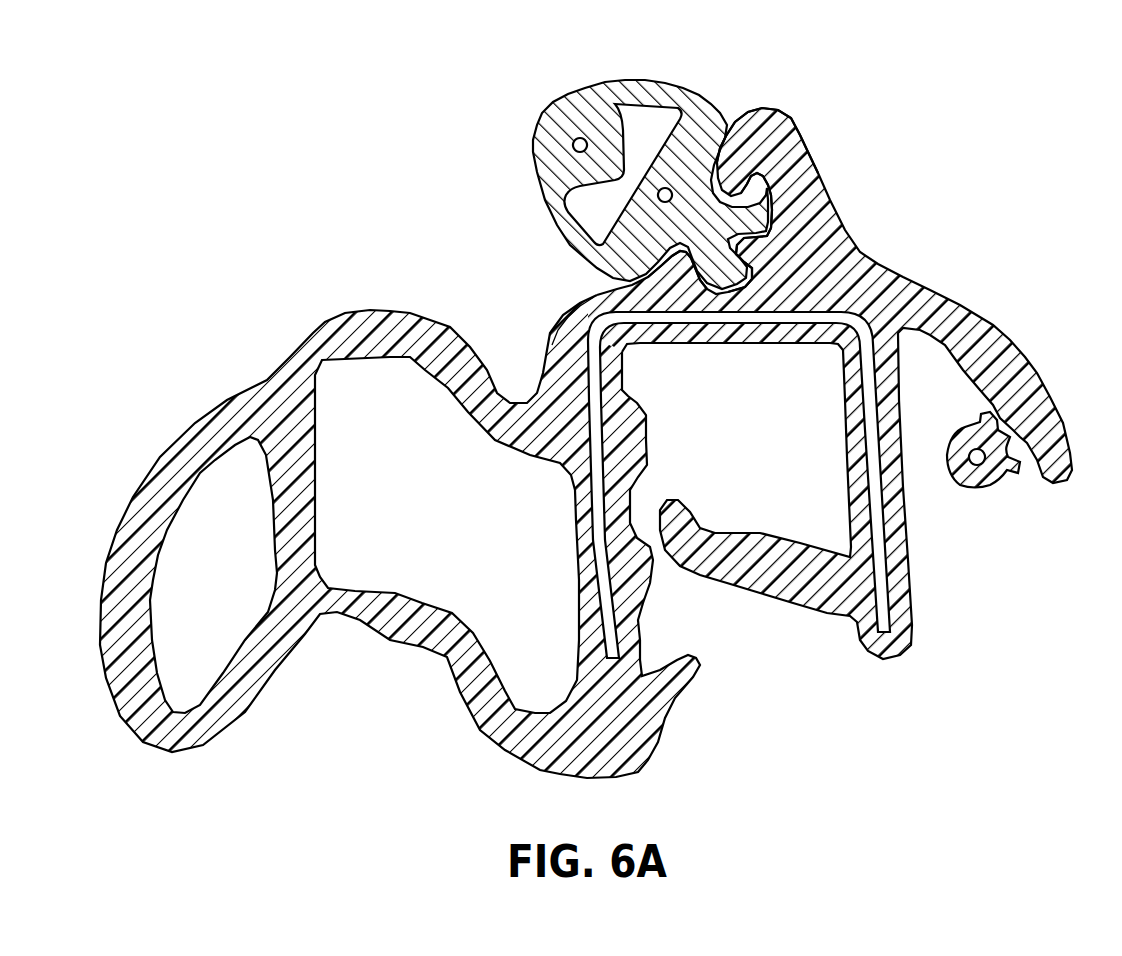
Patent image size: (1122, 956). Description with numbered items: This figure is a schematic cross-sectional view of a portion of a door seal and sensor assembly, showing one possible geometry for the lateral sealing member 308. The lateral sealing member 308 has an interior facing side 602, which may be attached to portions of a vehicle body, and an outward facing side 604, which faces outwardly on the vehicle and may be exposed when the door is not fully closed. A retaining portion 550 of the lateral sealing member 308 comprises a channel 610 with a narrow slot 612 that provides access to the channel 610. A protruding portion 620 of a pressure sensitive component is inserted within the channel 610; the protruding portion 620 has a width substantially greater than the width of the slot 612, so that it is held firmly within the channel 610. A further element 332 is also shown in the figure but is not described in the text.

The lateral sealing member 308 is at (830, 348).
The cover strip 332 is at (590, 86).
The retaining portion 550 is at (778, 118).
The interior facing side 602 is at (352, 748).
The outward facing side 604 is at (586, 437).
The channel 610 is at (762, 247).
The narrow slot 612 is at (675, 270).
The protruding portion 620 is at (757, 200).